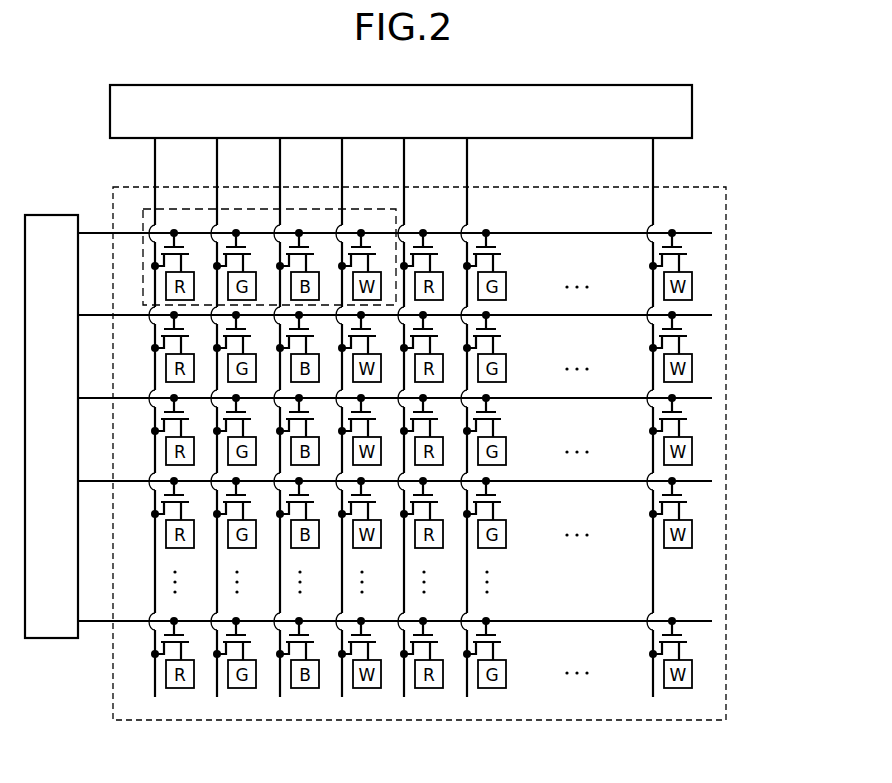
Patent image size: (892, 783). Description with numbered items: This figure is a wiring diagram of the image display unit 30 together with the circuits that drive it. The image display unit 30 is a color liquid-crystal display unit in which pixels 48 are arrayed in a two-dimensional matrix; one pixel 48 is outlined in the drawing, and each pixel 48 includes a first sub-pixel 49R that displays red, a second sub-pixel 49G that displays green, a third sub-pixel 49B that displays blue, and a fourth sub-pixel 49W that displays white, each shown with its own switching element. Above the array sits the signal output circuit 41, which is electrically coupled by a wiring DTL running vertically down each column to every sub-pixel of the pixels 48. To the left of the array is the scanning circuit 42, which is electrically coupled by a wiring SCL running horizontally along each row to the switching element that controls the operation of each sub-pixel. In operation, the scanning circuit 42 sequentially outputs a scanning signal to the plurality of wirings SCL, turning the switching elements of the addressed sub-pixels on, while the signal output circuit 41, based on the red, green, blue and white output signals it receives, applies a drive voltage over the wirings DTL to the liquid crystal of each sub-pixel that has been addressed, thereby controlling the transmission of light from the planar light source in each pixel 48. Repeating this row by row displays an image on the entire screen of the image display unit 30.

The signal output circuit 41 is at (692, 107).
The scanning circuit 42 is at (52, 638).
The image display unit 30 is at (727, 705).
The pixel 48 is at (143, 209).
The first sub-pixel 49R is at (196, 272).
The second sub-pixel 49G is at (258, 272).
The third sub-pixel 49B is at (320, 272).
The fourth sub-pixel 49W is at (382, 272).
The wiring DTL is at (654, 165).
The wiring SCL is at (97, 622).